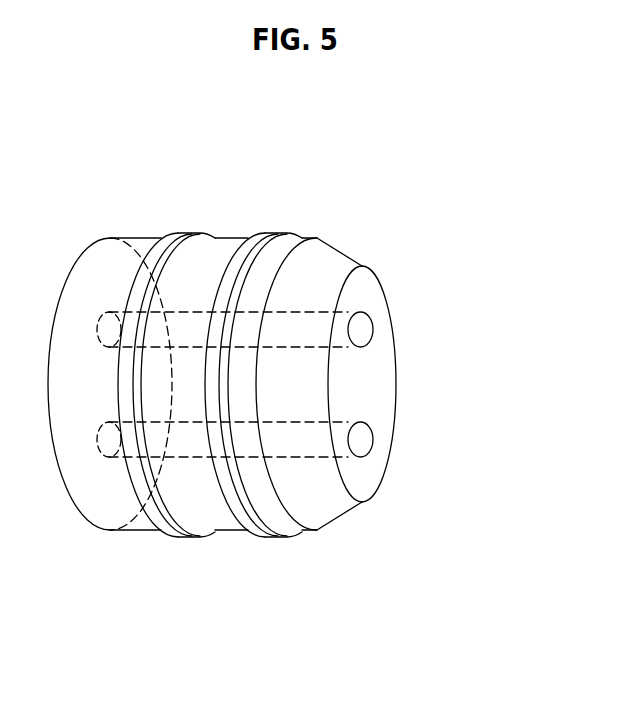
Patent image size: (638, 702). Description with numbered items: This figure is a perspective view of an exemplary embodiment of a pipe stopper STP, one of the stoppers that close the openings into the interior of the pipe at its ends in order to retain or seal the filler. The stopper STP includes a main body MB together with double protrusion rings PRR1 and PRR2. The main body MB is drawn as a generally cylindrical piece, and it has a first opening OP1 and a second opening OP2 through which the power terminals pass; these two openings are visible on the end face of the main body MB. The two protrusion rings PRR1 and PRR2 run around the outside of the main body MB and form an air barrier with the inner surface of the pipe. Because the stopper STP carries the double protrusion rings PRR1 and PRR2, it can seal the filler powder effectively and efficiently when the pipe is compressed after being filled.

The stopper STP is at (360, 190).
The main body MB is at (145, 238).
The first protrusion ring PRR1 is at (211, 535).
The second protrusion ring PRR2 is at (287, 535).
The first opening OP1 is at (375, 322).
The second opening OP2 is at (375, 432).